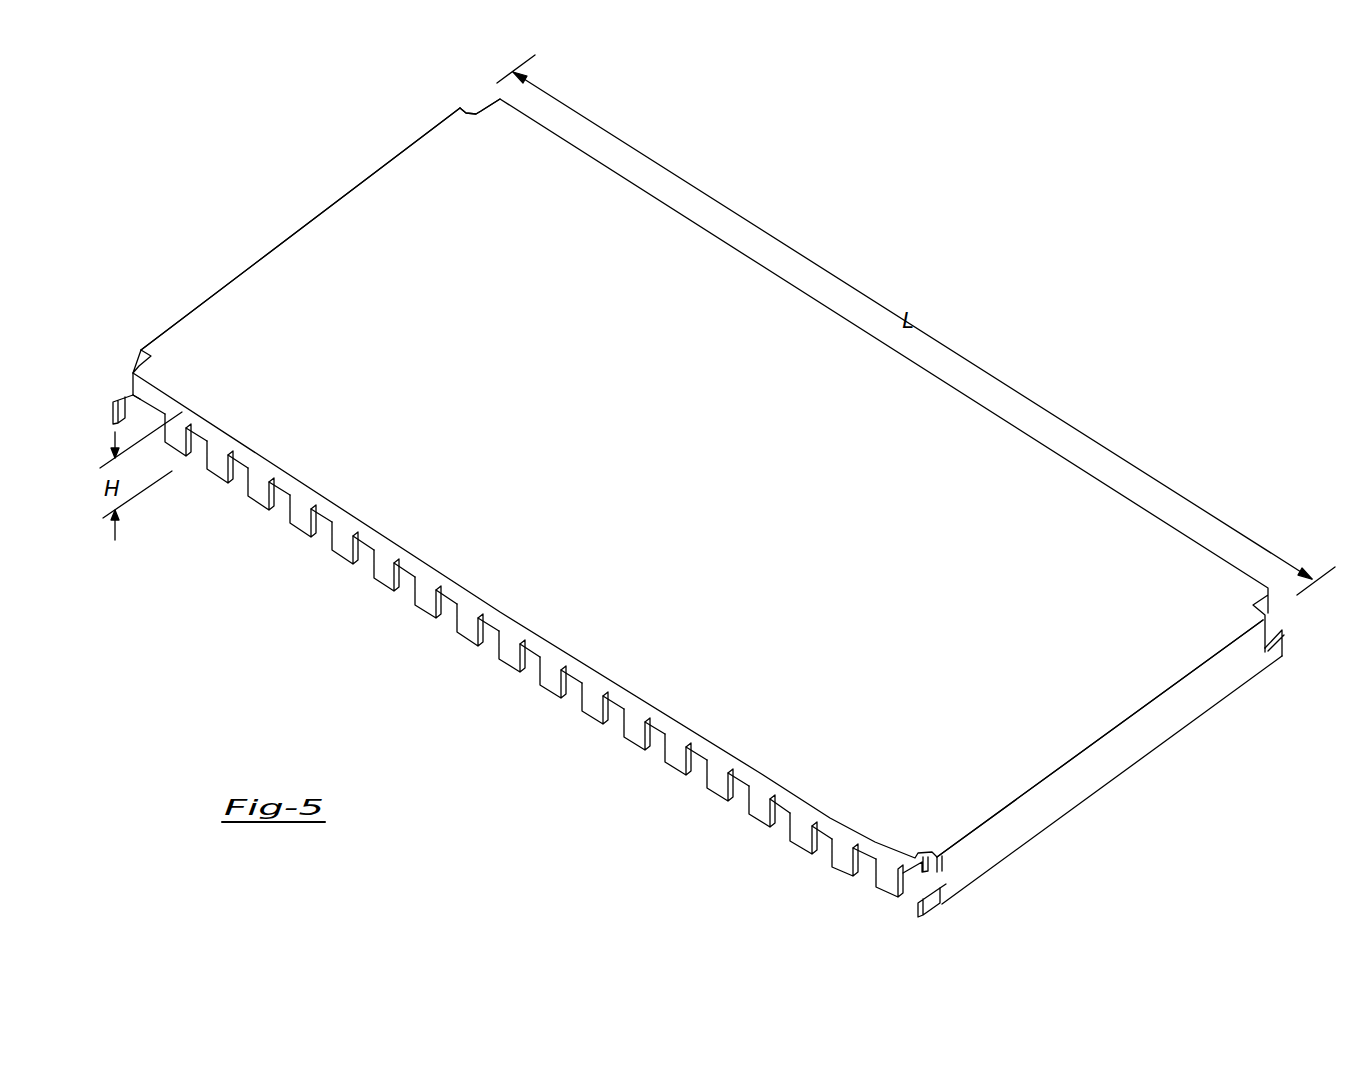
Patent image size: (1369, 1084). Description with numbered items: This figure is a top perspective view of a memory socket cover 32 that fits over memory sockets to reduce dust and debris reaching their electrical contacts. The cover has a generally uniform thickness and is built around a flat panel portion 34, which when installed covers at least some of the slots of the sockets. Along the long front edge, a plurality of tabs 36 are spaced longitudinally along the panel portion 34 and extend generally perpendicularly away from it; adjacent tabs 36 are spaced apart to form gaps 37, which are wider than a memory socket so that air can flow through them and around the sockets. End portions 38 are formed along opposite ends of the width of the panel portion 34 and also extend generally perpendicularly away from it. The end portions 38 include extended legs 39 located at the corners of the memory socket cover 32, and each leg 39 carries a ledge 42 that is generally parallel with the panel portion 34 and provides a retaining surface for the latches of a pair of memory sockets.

The memory socket cover 32 is at (975, 221).
The panel portion 34 is at (450, 153).
The tabs 36 is at (175, 444).
The gaps 37 is at (196, 451).
The end portions 38 is at (290, 232).
The extended legs 39 is at (128, 432).
The ledge 42 is at (122, 398).